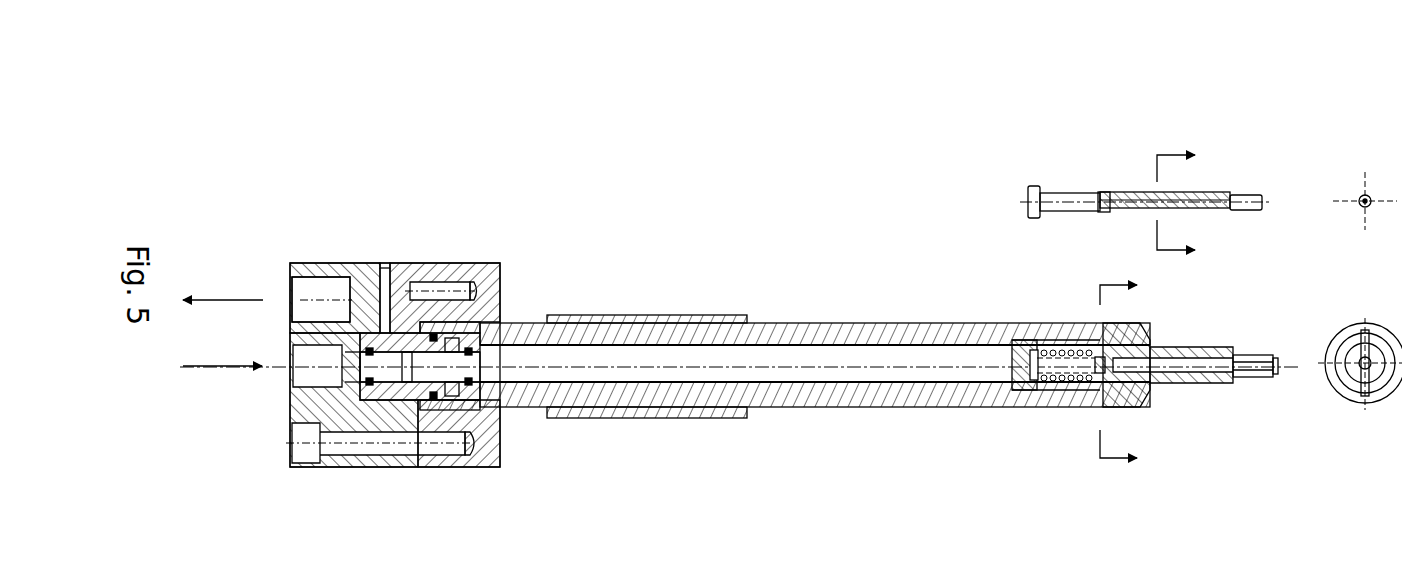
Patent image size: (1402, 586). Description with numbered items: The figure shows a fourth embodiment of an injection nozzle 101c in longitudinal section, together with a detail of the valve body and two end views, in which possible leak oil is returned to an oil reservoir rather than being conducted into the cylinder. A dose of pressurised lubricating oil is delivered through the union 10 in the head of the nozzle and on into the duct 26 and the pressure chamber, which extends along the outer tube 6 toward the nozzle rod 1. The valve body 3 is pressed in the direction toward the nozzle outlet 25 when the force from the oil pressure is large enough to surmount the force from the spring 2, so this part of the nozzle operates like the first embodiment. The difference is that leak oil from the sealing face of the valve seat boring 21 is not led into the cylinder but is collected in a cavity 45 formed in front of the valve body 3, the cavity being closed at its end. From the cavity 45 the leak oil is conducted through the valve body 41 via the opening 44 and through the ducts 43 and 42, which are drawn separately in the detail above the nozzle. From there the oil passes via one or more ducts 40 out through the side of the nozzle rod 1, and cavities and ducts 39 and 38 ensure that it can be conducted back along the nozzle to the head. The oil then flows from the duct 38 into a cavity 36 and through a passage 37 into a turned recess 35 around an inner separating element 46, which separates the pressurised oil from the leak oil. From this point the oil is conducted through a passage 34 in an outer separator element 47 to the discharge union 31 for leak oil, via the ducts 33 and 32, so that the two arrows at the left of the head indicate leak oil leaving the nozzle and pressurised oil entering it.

The injection nozzle 101c is at (315, 147).
The nozzle rod 1 is at (1123, 347).
The spring 2 is at (1098, 373).
The valve body 3 is at (1078, 368).
The outer tube 6 is at (793, 400).
The threaded hole for oil supply union 10 is at (305, 378).
The valve seat boring 21 is at (1257, 367).
The nozzle outlet 25 is at (1257, 353).
The duct for supplying lubricating oil to pressure chamber 26 is at (947, 372).
The discharge union for leak oil 31 is at (313, 287).
The duct 32 is at (377, 295).
The duct 33 is at (372, 348).
The passage 34 is at (407, 350).
The turned recess/cavity 35 is at (422, 350).
The cavity 36 is at (437, 347).
The passage 37 is at (453, 350).
The duct 38 is at (737, 318).
The cavity/duct 39 is at (1043, 338).
The duct 40 is at (1080, 327).
The valve body 41 is at (1065, 195).
The duct 42 is at (1100, 195).
The duct 43 is at (1145, 198).
The opening 44 is at (1260, 200).
The cavity 45 is at (1275, 380).
The inner separating element 46 is at (408, 378).
The outer separator element 47 is at (425, 392).